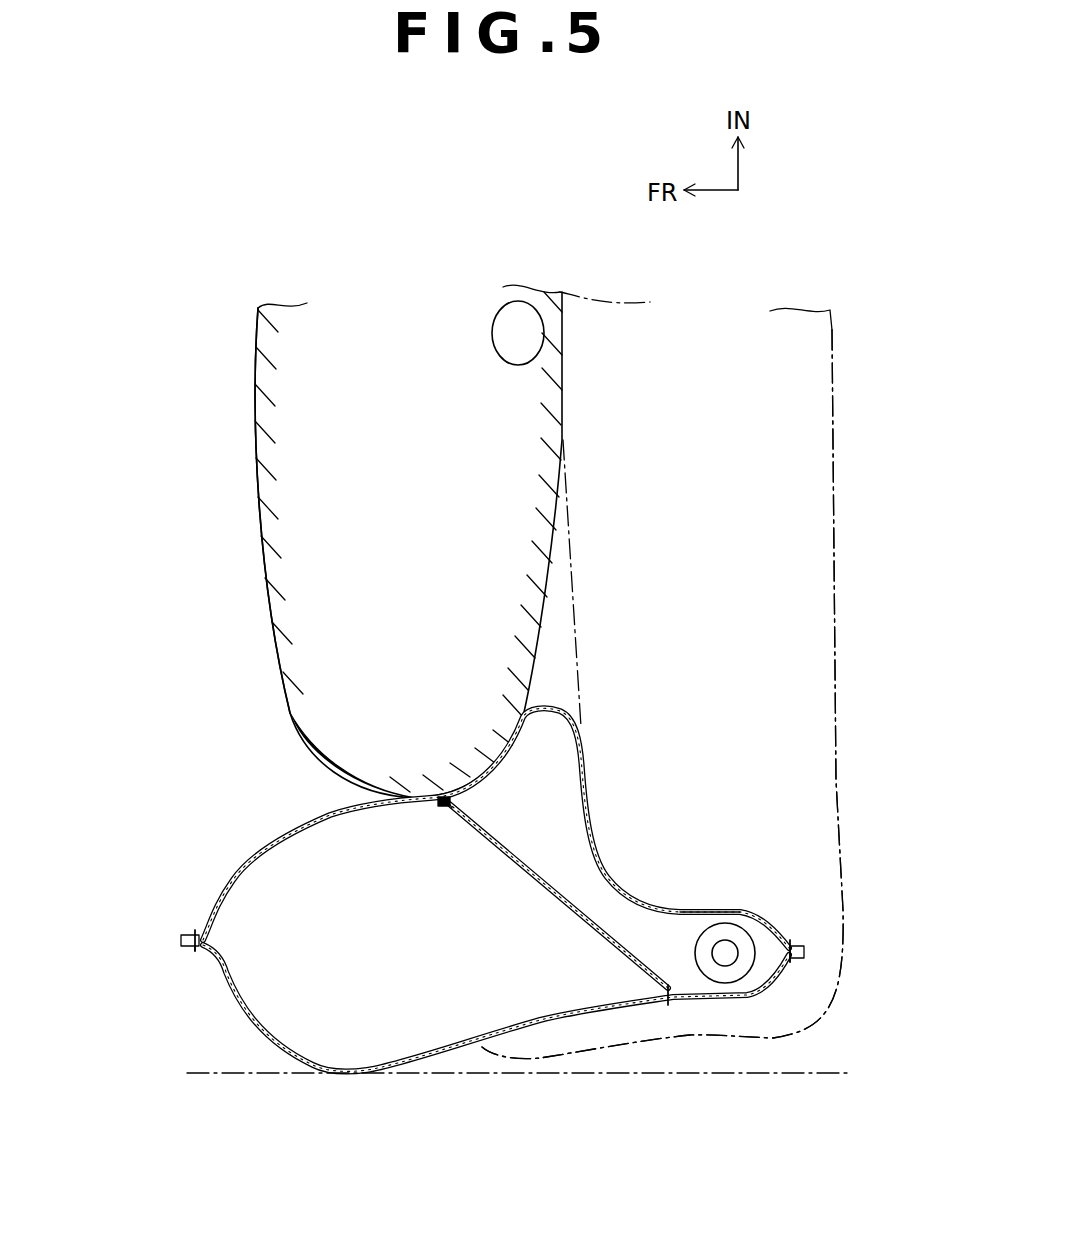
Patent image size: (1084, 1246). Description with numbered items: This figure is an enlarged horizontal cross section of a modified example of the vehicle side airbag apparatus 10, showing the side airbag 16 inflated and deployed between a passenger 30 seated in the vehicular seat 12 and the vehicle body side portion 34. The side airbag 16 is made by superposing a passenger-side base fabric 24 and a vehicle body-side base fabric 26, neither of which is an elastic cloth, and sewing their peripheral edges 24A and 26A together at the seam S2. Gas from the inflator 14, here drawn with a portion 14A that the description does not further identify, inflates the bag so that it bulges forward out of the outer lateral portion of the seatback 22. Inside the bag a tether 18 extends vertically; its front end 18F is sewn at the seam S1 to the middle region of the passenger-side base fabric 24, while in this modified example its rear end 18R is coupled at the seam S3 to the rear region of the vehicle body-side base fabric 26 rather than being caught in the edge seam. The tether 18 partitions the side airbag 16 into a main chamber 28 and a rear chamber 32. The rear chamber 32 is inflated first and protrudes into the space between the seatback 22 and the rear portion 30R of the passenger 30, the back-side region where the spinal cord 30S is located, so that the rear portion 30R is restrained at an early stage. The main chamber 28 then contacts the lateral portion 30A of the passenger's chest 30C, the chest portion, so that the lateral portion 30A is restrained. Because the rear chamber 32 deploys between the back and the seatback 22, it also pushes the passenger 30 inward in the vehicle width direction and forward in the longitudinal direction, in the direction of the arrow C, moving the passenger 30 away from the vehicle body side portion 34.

The vehicle side airbag apparatus 10 is at (473, 913).
The vehicular seat 12 is at (662, 694).
The inflator 14 is at (693, 933).
The bolt 14A is at (722, 950).
The side airbag 16 is at (473, 913).
The tether 18 is at (538, 880).
The front end of the tether 18F is at (443, 806).
The rear end of the tether 18R is at (660, 990).
The seatback 22 is at (843, 326).
The passenger-side base fabric 24 is at (309, 815).
The peripheral edge of the passenger-side base fabric 24A is at (186, 932).
The vehicle body-side base fabric 26 is at (253, 1040).
The peripheral edge of the vehicle body-side base fabric 26A is at (196, 953).
The main chamber 28 is at (408, 950).
The passenger 30 is at (286, 700).
The lateral portion of the passenger 30A is at (420, 806).
The passenger's chest 30C is at (267, 638).
The rear portion of the passenger 30R is at (532, 778).
The spinal cord 30S is at (497, 354).
The rear chamber 32 is at (575, 854).
The vehicle body side portion 34 is at (476, 1073).
The seam S1 is at (450, 808).
The seam S2 is at (201, 930).
The seam S3 is at (670, 1004).
The arrow C is at (478, 732).